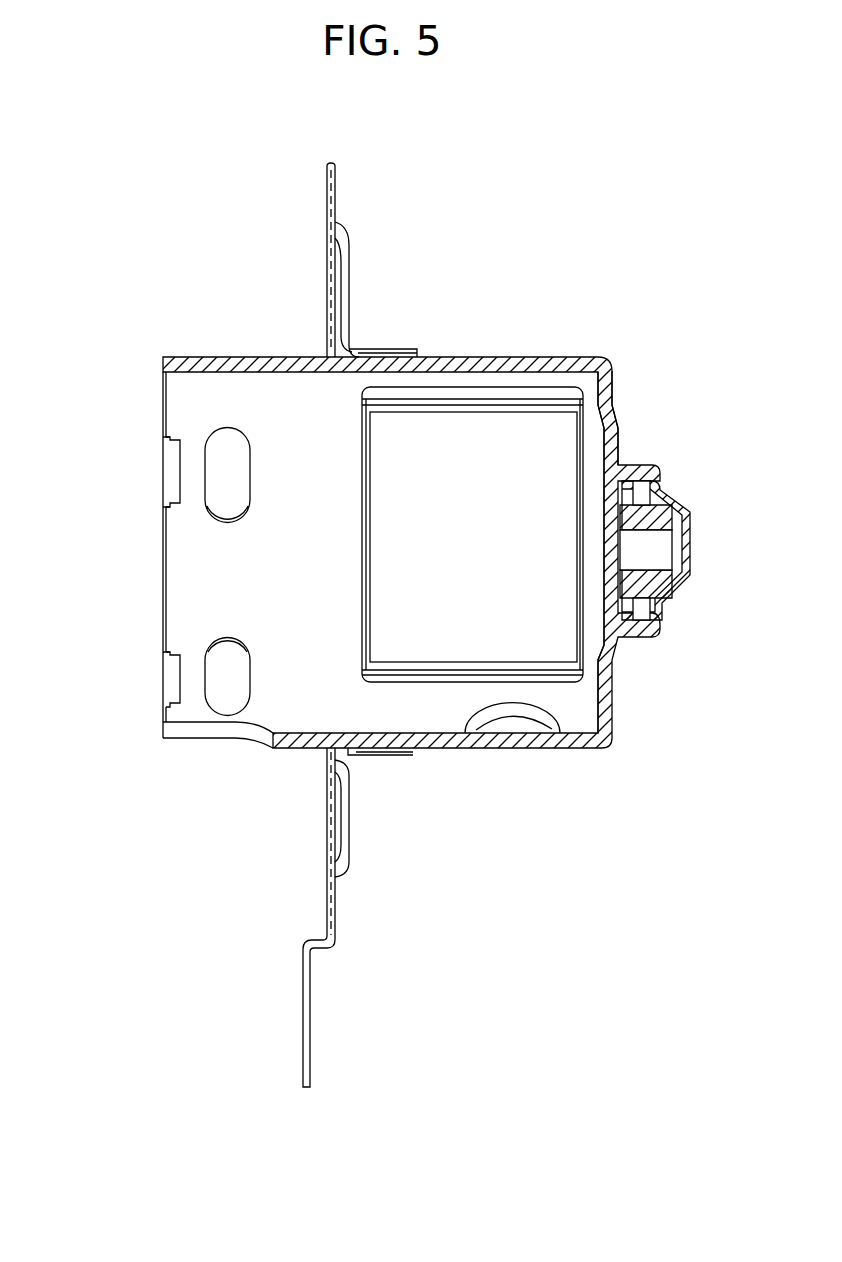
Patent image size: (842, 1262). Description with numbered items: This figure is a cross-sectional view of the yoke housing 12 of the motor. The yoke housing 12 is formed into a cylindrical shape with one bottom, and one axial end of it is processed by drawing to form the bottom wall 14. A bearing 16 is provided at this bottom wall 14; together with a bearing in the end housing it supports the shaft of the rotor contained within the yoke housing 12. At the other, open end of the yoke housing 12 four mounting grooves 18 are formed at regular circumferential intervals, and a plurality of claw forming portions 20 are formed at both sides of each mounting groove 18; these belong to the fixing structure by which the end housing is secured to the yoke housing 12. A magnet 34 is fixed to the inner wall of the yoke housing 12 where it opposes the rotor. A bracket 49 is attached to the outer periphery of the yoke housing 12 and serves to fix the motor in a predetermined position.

The yoke housing 12 is at (241, 356).
The bottom wall 14 is at (621, 438).
The bearing 16 is at (672, 508).
The mounting groove 18 is at (180, 469).
The claw forming portion 20 is at (163, 420).
The magnet 34 is at (494, 436).
The bracket 49 is at (325, 868).